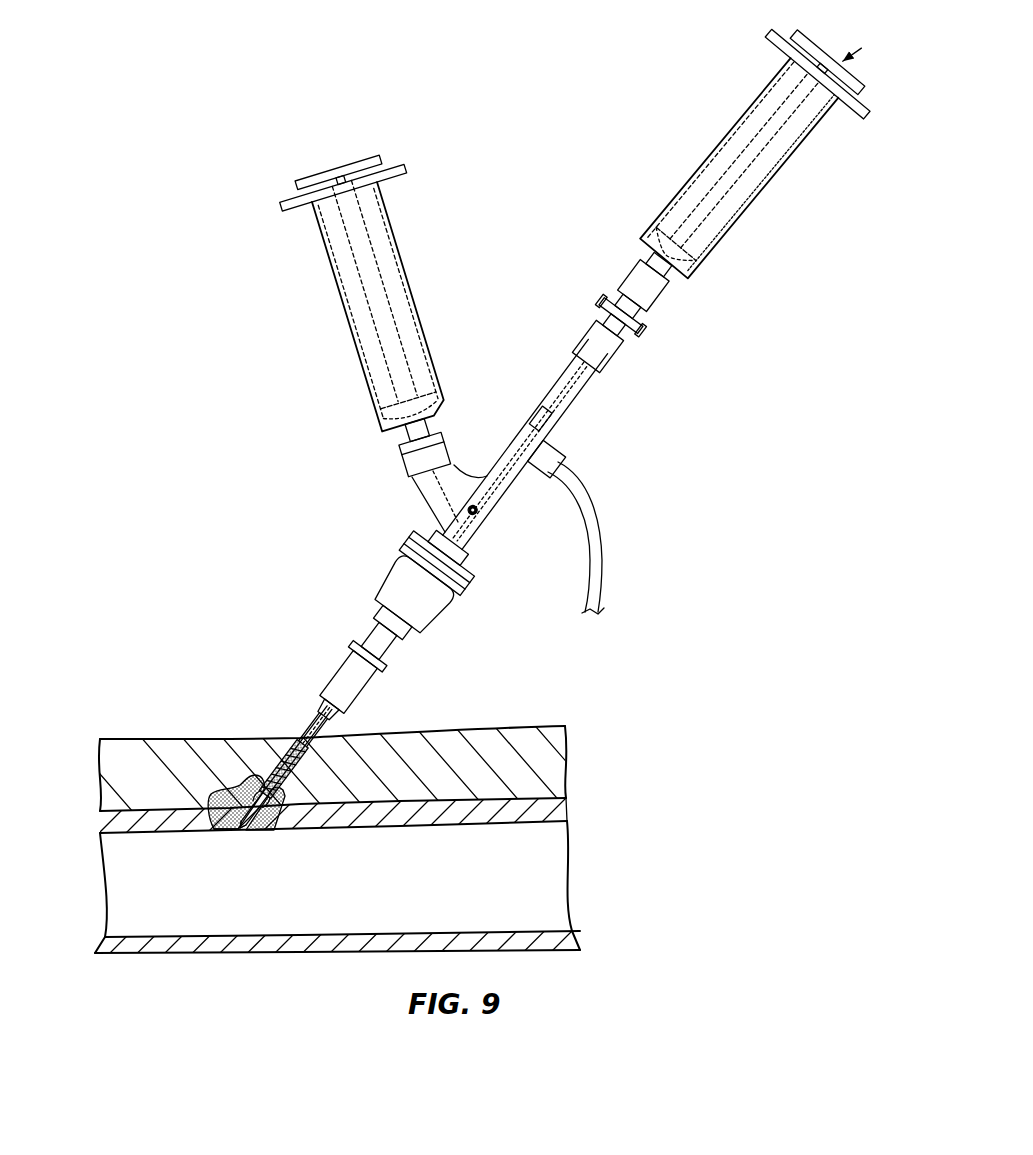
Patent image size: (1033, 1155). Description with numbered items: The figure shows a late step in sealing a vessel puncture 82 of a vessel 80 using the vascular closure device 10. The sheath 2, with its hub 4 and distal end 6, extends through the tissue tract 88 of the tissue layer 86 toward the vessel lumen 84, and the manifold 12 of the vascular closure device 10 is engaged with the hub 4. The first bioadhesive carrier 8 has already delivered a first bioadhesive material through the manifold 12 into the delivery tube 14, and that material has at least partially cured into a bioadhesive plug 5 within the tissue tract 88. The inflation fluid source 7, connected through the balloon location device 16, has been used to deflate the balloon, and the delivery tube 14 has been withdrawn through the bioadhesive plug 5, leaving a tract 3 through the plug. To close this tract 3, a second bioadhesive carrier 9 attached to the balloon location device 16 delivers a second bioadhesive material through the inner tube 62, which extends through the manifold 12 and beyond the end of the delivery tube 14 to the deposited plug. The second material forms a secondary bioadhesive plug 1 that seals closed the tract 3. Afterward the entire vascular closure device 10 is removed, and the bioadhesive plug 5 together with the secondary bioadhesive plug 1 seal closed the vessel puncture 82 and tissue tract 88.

The secondary bioadhesive plug 1 is at (233, 832).
The sheath 2 is at (339, 662).
The tract 3 is at (248, 832).
The hub 4 is at (383, 573).
The bioadhesive plug 5 is at (210, 797).
The distal end 6 is at (352, 700).
The inflation fluid source 7 is at (592, 516).
The first bioadhesive carrier 8 is at (397, 227).
The second bioadhesive carrier 9 is at (707, 150).
The vascular closure device 10 is at (230, 402).
The manifold 12 is at (496, 513).
The delivery tube 14 is at (316, 695).
The balloon location device 16 is at (536, 401).
The inner tube 62 is at (232, 790).
The vessel 80 is at (570, 807).
The vessel puncture 82 is at (220, 830).
The vessel lumen 84 is at (552, 877).
The tissue layer 86 is at (558, 768).
The tissue tract 88 is at (268, 787).